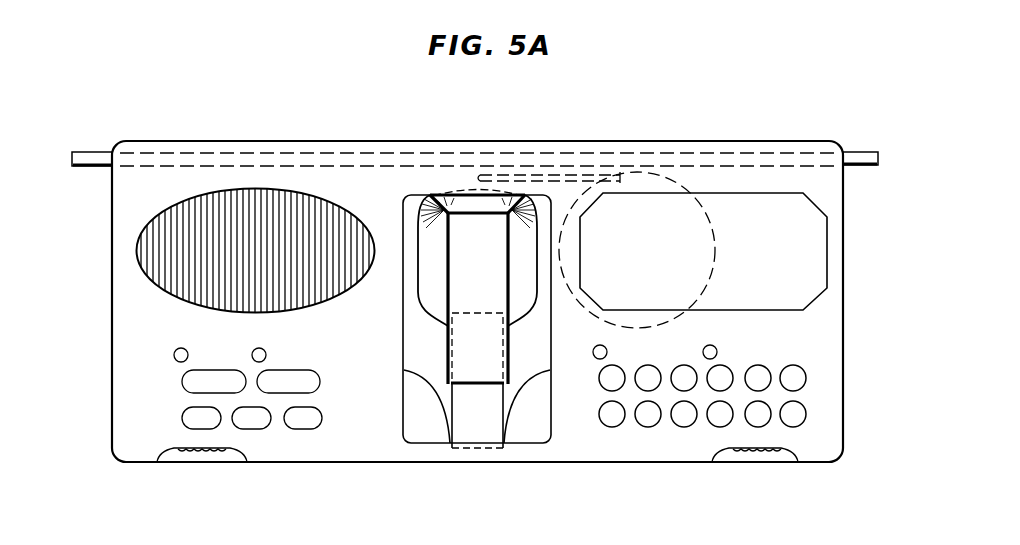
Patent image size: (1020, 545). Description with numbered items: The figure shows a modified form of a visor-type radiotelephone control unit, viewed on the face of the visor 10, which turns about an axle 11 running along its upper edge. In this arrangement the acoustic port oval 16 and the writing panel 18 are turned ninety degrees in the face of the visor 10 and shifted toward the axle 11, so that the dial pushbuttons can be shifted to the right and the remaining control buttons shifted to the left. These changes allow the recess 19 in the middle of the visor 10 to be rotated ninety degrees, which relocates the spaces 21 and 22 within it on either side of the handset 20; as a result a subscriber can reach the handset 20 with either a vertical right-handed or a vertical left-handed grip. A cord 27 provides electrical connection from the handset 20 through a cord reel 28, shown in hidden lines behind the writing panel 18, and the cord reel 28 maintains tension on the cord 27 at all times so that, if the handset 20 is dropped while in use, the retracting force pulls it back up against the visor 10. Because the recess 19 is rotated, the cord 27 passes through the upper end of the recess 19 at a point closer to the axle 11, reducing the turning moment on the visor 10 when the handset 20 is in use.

The visor 10 is at (120, 353).
The axle 11 is at (78, 153).
The acoustic port oval 16 is at (258, 195).
The writing panel 18 is at (818, 250).
The recess 19 is at (405, 361).
The handset 20 is at (490, 272).
The space 21 is at (415, 332).
The space 22 is at (536, 340).
The cord 27 is at (554, 170).
The cord reel 28 is at (684, 190).